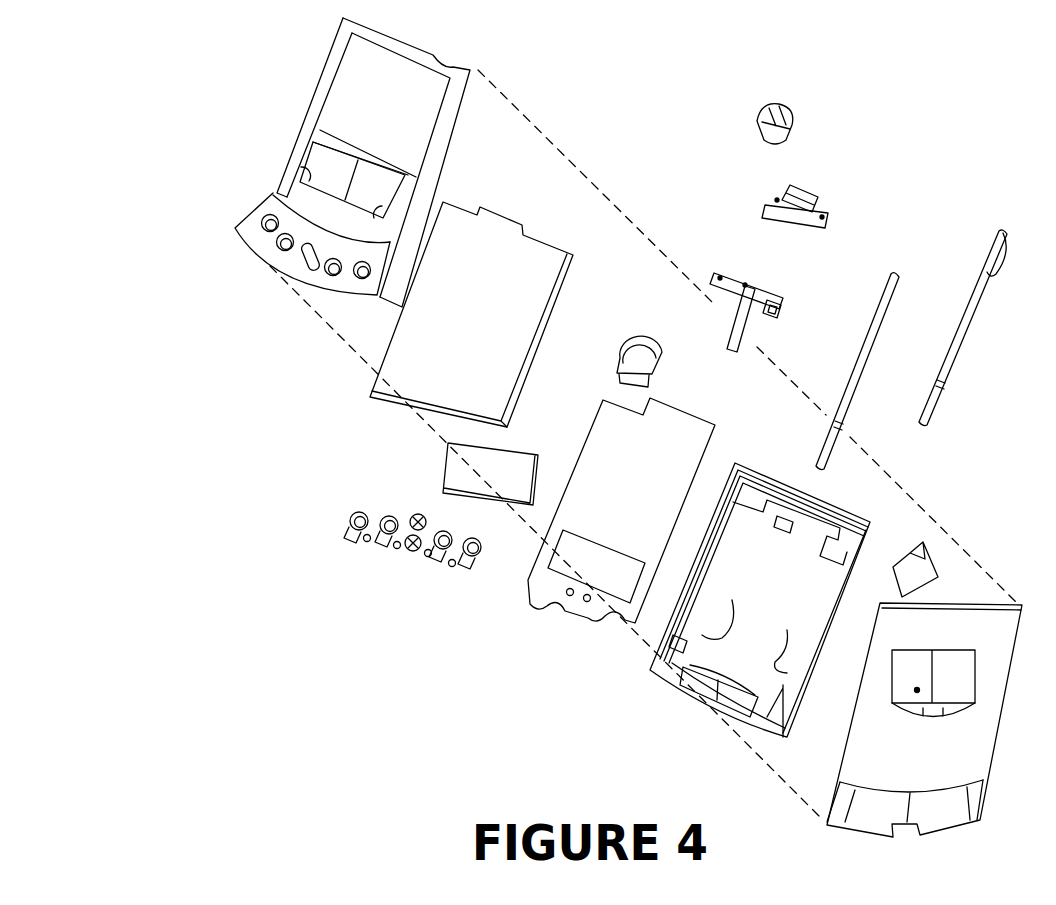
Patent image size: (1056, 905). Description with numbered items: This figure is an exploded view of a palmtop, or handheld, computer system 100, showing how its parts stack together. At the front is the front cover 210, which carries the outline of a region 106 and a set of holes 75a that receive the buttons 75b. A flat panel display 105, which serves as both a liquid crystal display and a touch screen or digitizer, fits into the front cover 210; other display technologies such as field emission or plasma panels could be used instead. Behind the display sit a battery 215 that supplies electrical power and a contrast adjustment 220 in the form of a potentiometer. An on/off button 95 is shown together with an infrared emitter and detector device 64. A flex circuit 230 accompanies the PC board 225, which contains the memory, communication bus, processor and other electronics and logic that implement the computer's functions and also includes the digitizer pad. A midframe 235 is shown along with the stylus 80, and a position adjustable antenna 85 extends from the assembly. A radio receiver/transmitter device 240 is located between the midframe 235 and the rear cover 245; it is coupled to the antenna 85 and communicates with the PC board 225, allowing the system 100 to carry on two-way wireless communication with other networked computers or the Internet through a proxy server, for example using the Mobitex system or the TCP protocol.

The palmtop computer system 100 is at (90, 58).
The region 106 is at (315, 160).
The holes 75a is at (262, 222).
The buttons 75b is at (380, 518).
The front cover 210 is at (401, 116).
The flat panel display 105 is at (496, 320).
The battery 215 is at (508, 479).
The contrast adjustment 220 is at (636, 340).
The PC board 225 is at (652, 492).
The flex circuit 230 is at (766, 281).
The midframe 235 is at (788, 592).
The radio receiver/transmitter device 240 is at (915, 549).
The rear cover 245 is at (938, 761).
The infrared emitter and detector device 64 is at (811, 186).
The stylus 80 is at (983, 308).
The position adjustable antenna 85 is at (884, 334).
The on/off button 95 is at (794, 109).